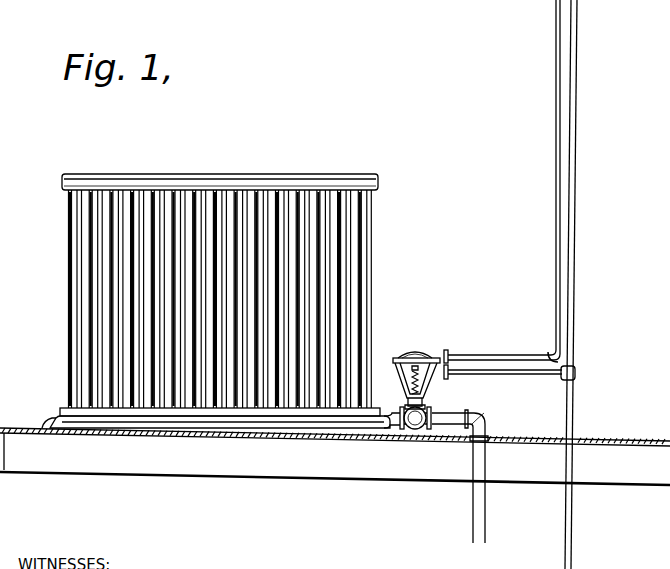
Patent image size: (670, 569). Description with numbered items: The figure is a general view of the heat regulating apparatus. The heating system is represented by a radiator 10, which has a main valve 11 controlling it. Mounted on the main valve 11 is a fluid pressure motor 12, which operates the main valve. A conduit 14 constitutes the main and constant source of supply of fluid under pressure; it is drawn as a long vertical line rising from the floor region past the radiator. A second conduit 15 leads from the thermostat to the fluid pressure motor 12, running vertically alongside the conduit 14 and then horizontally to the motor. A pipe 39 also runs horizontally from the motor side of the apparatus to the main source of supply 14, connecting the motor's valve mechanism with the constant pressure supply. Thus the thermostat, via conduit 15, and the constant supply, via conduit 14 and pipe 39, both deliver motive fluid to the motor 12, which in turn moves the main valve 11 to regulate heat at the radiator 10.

The radiator 10 is at (216, 301).
The main valve 11 is at (432, 408).
The fluid pressure motor 12 is at (417, 365).
The conduit 14 is at (578, 130).
The conduit 15 is at (556, 122).
The pipe 39 is at (509, 385).